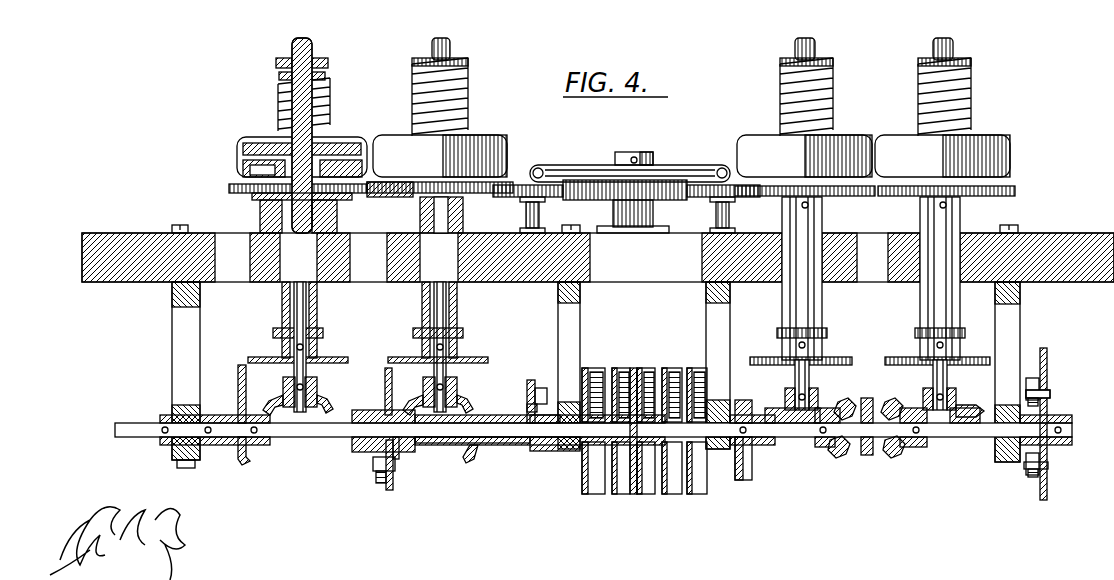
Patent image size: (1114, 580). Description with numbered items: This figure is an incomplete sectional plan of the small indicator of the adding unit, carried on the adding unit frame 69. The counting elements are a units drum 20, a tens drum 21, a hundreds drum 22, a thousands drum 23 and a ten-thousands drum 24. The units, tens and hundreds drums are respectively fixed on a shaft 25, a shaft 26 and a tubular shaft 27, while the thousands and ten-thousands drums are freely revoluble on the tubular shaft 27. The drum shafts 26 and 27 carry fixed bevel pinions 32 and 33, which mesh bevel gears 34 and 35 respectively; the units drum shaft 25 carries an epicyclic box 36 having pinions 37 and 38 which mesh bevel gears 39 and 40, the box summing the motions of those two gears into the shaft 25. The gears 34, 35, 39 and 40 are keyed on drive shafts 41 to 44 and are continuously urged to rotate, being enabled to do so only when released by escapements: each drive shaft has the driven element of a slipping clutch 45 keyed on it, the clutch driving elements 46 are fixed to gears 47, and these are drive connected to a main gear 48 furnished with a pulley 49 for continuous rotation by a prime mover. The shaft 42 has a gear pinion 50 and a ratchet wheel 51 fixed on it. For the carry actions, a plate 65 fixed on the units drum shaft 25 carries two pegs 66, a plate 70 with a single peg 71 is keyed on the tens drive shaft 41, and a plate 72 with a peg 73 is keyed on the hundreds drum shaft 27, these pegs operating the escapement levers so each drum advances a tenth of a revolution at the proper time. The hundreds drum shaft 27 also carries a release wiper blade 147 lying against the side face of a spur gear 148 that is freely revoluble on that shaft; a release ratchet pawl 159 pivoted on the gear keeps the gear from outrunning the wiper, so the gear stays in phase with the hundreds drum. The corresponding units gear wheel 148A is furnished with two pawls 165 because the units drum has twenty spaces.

The units drum 20 is at (694, 368).
The tens drum 21 is at (669, 368).
The hundreds drum 22 is at (644, 368).
The thousands drum 23 is at (619, 368).
The ten-thousands drum 24 is at (595, 368).
The units drum shaft 25 is at (783, 437).
The tens drum shaft 26 is at (571, 434).
The tubular shaft 27 is at (510, 447).
The bevel pinion 32 is at (263, 450).
The bevel pinion 33 is at (472, 457).
The bevel gear 34 is at (326, 396).
The bevel gear 35 is at (459, 394).
The epicyclic box 36 is at (871, 395).
The pinion 37 is at (832, 450).
The pinion 38 is at (902, 448).
The bevel gear 39 is at (836, 402).
The bevel gear 40 is at (903, 404).
The tens drive shaft 41 is at (307, 375).
The drive shaft 42 is at (421, 306).
The drive shaft 43 is at (790, 375).
The drive shaft 44 is at (948, 376).
The slipping clutch 45 is at (395, 126).
The clutch driving element 46 is at (240, 182).
The gear 47 is at (238, 195).
The main gear 48 is at (386, 196).
The pulley 49 is at (582, 168).
The gear pinion 50 is at (463, 330).
The ratchet wheel 51 is at (480, 358).
The plate 65 is at (734, 460).
The pegs 66 is at (752, 392).
The adding unit frame 69 is at (1070, 282).
The plate 70 is at (266, 197).
The peg 71 is at (336, 202).
The plate 72 is at (524, 405).
The peg 73 is at (534, 384).
The release wiper blade 147 is at (400, 456).
The spur gear 148 is at (384, 393).
The units gear wheel 148A is at (1050, 480).
The release ratchet pawl 159 is at (374, 468).
The pawls 165 is at (1052, 388).